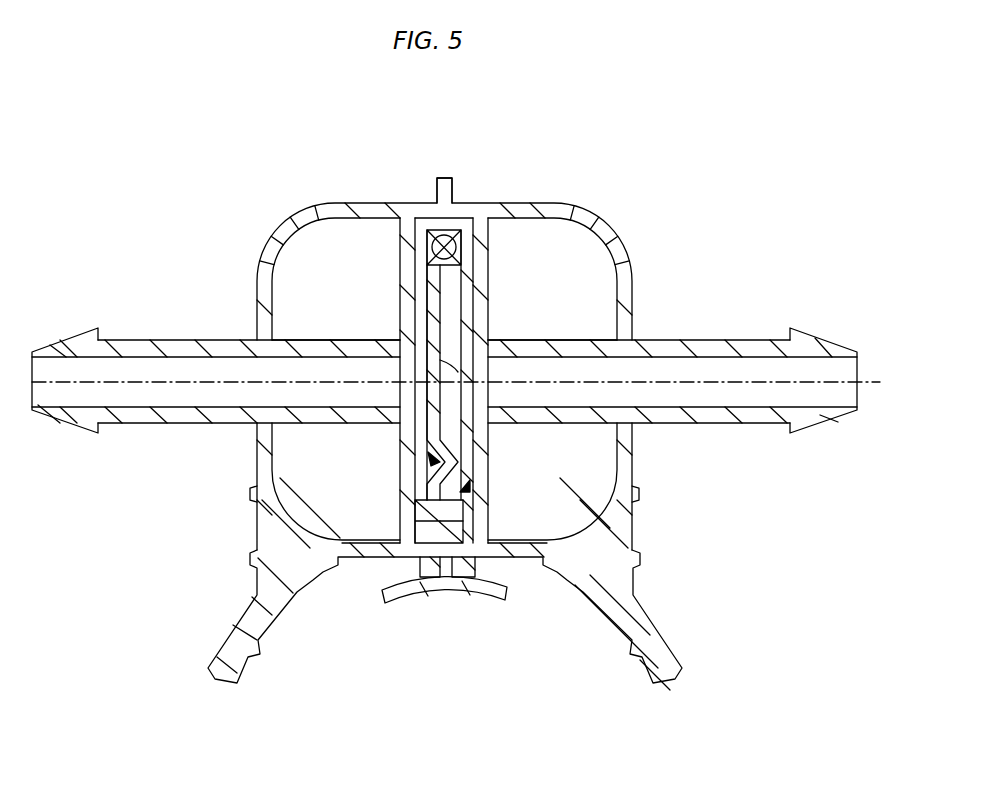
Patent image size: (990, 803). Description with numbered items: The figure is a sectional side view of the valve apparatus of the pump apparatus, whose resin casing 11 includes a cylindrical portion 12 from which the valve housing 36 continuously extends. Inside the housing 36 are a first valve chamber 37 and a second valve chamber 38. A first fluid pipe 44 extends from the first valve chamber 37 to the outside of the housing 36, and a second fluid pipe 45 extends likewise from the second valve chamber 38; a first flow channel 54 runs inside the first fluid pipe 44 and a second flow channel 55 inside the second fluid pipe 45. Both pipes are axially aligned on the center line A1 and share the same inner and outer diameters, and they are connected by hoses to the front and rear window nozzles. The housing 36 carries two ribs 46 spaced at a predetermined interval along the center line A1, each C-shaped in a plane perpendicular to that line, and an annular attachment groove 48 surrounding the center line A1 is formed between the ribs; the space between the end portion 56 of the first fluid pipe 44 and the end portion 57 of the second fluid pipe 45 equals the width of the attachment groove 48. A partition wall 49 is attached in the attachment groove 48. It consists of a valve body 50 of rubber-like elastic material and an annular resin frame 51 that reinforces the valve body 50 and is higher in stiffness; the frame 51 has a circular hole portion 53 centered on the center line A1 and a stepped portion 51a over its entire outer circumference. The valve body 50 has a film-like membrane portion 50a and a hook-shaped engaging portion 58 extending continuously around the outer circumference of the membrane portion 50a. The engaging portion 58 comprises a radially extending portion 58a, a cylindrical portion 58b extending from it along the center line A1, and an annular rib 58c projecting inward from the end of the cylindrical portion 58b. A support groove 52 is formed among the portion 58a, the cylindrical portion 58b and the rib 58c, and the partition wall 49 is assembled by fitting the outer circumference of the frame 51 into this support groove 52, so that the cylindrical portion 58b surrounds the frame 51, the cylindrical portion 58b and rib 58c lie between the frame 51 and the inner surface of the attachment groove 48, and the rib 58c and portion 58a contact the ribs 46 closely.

The casing 11 is at (648, 583).
The cylindrical portion 12 is at (660, 620).
The housing 36 is at (548, 210).
The first valve chamber 37 is at (287, 298).
The second valve chamber 38 is at (600, 298).
The first fluid pipe 44 is at (130, 425).
The second fluid pipe 45 is at (745, 425).
The ribs 46 is at (403, 250).
The attachment groove 48 is at (490, 308).
The partition wall 49 is at (636, 493).
The valve body 50 is at (437, 458).
The membrane portion 50a is at (452, 368).
The frame 51 is at (256, 495).
The stepped portion 51a is at (423, 540).
The support groove 52 is at (441, 242).
The hole portion 53 is at (405, 428).
The first flow channel 54 is at (112, 365).
The second flow channel 55 is at (772, 365).
The end portion 56 is at (418, 303).
The end portion 57 is at (490, 447).
The engaging portion 58 is at (463, 547).
The portion extending in a radial direction 58a is at (470, 512).
The cylindrical portion 58b is at (452, 547).
The annular rib 58c is at (420, 515).
The center line A1 is at (885, 381).